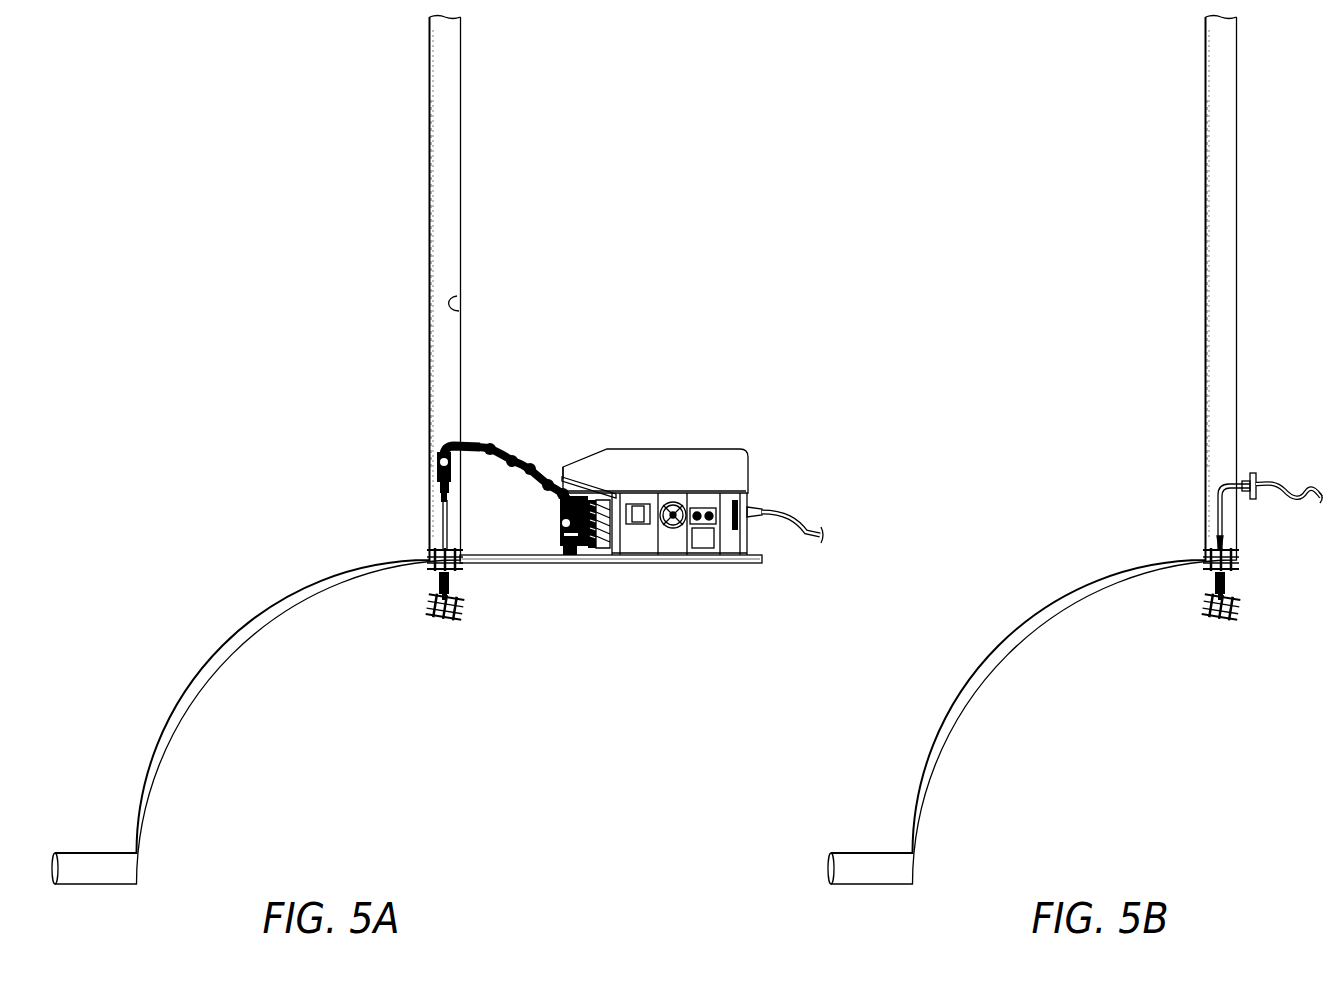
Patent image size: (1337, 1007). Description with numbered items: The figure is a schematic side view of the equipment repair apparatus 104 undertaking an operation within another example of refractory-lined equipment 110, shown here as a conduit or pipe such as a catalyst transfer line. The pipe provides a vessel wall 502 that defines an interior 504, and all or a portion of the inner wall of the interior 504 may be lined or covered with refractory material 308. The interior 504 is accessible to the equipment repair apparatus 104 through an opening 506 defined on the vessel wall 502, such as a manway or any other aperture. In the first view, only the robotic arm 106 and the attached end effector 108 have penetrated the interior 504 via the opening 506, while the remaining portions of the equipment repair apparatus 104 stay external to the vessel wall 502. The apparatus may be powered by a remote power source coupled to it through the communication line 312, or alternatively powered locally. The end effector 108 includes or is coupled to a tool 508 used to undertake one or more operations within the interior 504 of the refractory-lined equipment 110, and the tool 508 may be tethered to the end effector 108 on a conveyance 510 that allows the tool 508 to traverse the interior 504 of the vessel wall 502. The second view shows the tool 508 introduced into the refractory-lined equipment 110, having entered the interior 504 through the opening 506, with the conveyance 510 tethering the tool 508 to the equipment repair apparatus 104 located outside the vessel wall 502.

In FIG. 5A, the refractory-lined equipment 110 is at (303, 450).
In FIG. 5B, the refractory-lined equipment 110 is at (1071, 450).
In FIG. 5A, the vessel wall 502 is at (461, 152).
In FIG. 5B, the vessel wall 502 is at (1237, 152).
In FIG. 5A, the interior 504 is at (447, 229).
In FIG. 5B, the interior 504 is at (1222, 226).
In FIG. 5A, the refractory material 308 is at (457, 296).
In FIG. 5A, the opening 506 is at (480, 447).
In FIG. 5A, the robotic arm 106 is at (537, 461).
In FIG. 5A, the equipment repair apparatus 104 is at (552, 539).
In FIG. 5A, the end effector 108 is at (436, 487).
In FIG. 5A, the conveyance 510 is at (443, 519).
In FIG. 5B, the conveyance 510 is at (1274, 492).
In FIG. 5A, the tool 508 is at (425, 584).
In FIG. 5B, the tool 508 is at (1200, 584).
In FIG. 5A, the communication line 312 is at (806, 531).